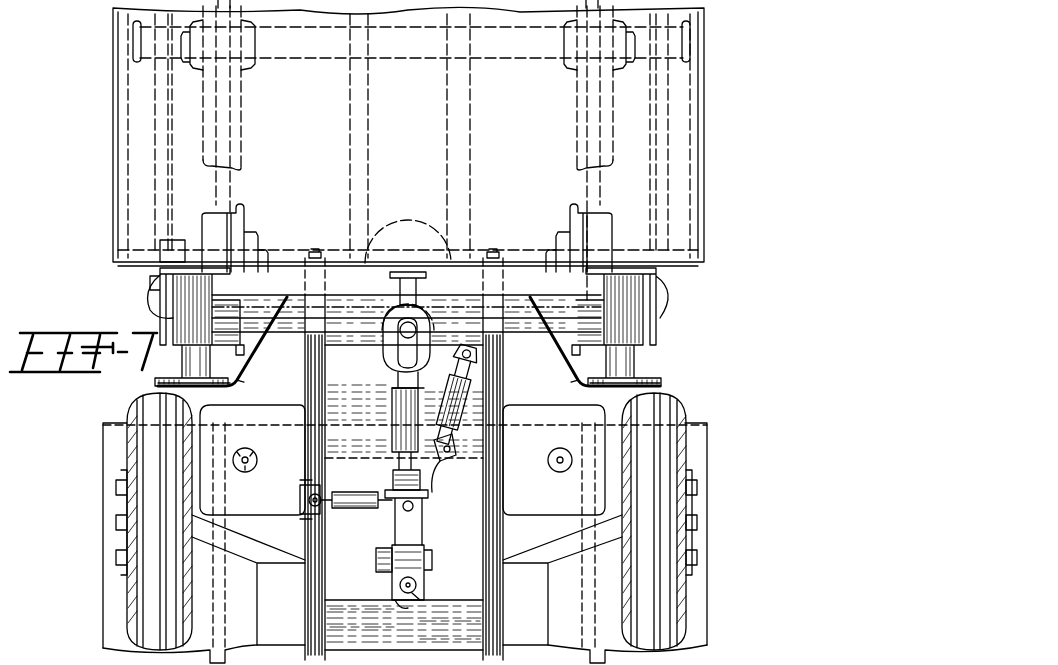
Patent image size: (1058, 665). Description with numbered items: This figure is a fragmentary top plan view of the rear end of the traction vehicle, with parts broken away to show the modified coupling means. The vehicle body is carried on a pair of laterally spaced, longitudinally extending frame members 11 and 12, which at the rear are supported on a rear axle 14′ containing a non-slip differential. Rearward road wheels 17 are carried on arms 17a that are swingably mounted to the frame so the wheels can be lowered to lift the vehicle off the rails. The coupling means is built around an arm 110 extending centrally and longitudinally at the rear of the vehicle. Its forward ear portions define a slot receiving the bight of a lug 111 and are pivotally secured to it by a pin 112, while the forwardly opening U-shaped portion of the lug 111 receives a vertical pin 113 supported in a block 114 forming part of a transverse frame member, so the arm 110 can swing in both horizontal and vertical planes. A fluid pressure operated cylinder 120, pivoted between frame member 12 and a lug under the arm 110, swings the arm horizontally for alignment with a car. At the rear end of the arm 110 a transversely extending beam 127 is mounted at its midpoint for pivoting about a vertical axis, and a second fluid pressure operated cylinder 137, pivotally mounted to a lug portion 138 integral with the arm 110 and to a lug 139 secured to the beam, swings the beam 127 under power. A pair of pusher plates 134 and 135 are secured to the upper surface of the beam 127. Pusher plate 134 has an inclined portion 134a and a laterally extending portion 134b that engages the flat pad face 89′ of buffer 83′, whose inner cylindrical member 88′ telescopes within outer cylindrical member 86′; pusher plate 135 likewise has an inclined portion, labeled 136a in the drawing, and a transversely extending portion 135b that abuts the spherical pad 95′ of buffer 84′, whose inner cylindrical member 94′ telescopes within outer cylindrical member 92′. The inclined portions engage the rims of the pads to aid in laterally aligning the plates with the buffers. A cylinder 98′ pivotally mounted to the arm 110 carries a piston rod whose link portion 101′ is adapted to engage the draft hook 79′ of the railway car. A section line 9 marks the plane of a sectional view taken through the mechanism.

The rear axle 14′ is at (568, 222).
The section line 9- 9 is at (408, 195).
The beam 127 is at (470, 306).
The draft hook 79′ is at (400, 336).
The link portion 101′ is at (393, 355).
The cylinder 98′ is at (397, 400).
The right brace upper end 136a is at (556, 356).
The lug 139 is at (472, 358).
The pusher plate 135 is at (574, 386).
The fluid pressure operated cylinder 137 is at (452, 434).
The lug portion 138 is at (440, 461).
The fluid pressure operated cylinder 120 is at (366, 495).
The pin 112 is at (375, 557).
The lug 111 is at (390, 578).
The arm 110 is at (418, 520).
The block 114 is at (420, 600).
The vertical pin 113 is at (412, 593).
The frame member 11 is at (504, 542).
The frame member 12 is at (305, 538).
The arms 17a is at (548, 553).
The rearward road wheels 17 is at (745, 418).
The outer cylindrical member 86′ is at (185, 280).
The buffer 83′ is at (163, 324).
The inner cylindrical member 88′ is at (180, 365).
The inclined portion 134a is at (256, 364).
The pusher plate 134 is at (240, 383).
The laterally extending portion 134b is at (160, 385).
The pad 89′ is at (205, 406).
The outer cylindrical member 92′ is at (648, 326).
The buffer 84′ is at (650, 346).
The inner cylindrical member 94′ is at (648, 366).
The pad 95′ is at (650, 380).
The transversely extending portion 135b is at (660, 388).